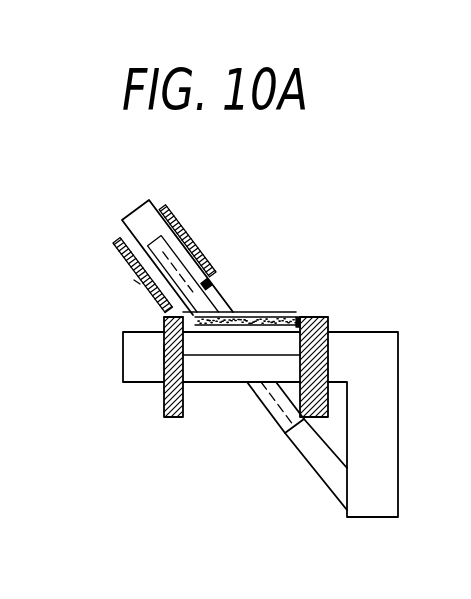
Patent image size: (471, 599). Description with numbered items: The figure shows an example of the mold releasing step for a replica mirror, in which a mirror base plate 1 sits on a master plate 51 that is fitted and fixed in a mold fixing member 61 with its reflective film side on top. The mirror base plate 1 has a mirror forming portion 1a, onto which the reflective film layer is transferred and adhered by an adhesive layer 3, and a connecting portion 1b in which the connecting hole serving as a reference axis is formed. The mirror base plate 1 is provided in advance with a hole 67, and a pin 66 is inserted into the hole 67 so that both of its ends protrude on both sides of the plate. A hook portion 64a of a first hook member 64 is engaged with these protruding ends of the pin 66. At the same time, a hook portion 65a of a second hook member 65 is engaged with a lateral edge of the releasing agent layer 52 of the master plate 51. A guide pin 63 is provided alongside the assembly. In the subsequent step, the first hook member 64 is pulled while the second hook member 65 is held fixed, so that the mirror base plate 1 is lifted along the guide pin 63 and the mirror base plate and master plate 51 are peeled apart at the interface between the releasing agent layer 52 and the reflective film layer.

The mirror base plate 1 is at (149, 196).
The mirror forming portion 1a is at (265, 311).
The connecting portion 1b is at (268, 415).
The adhesive layer 3 is at (300, 318).
The master plate 51 is at (213, 347).
The releasing agent layer 52 is at (165, 348).
The mold fixing member 61 is at (122, 363).
The guide pin 63 is at (322, 463).
The first hook member 64 is at (168, 212).
The hook portion 64a is at (207, 285).
The second hook member 65 is at (162, 407).
The hook portion 65a is at (163, 318).
The pin 66 is at (134, 280).
The hole 67 is at (178, 287).